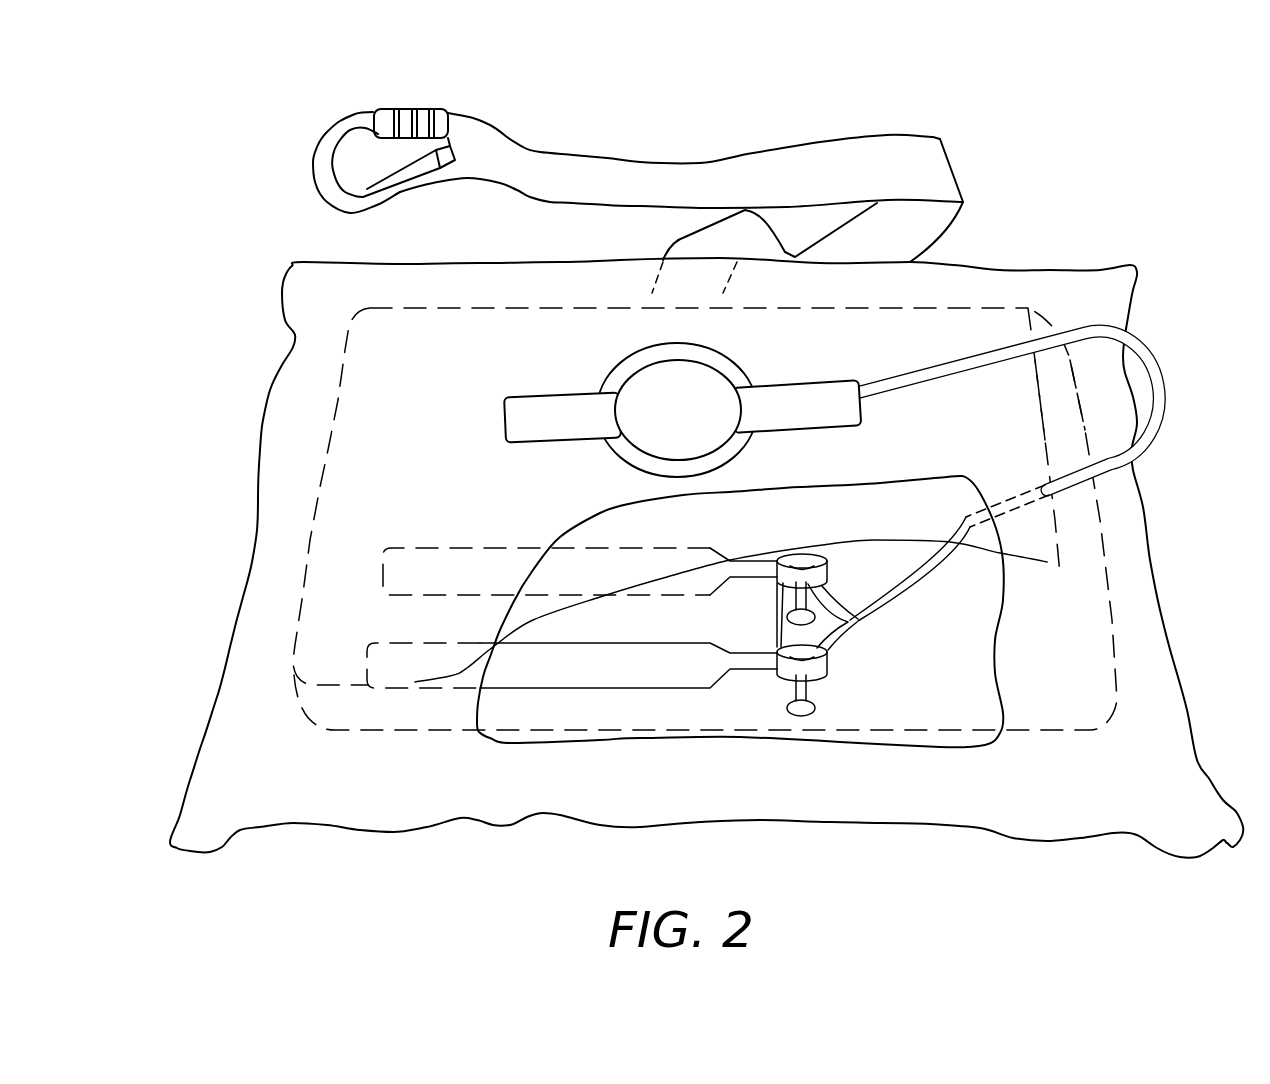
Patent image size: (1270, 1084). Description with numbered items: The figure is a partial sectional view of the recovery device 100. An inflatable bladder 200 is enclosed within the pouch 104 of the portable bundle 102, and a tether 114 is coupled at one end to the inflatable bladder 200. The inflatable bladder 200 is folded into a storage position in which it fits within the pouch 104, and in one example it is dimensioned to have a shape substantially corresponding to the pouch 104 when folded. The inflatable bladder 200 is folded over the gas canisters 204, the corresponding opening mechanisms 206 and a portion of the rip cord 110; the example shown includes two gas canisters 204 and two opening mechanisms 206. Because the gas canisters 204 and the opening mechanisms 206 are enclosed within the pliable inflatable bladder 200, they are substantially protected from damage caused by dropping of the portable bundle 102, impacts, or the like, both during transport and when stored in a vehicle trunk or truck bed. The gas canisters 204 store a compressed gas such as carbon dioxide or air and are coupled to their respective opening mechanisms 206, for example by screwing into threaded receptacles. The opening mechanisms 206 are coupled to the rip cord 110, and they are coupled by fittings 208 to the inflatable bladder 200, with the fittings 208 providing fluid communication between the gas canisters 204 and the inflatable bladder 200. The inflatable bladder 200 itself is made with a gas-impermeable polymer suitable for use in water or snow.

The recovery device 100 is at (706, 476).
The portable bundle 102 is at (1117, 262).
The pouch 104 is at (347, 411).
The rip cord 110 is at (1163, 398).
The tether 114 is at (511, 143).
The inflatable bladder 200 is at (961, 490).
The gas canister 204 is at (692, 597).
The opening mechanism 206 is at (828, 568).
The fitting 208 is at (790, 602).